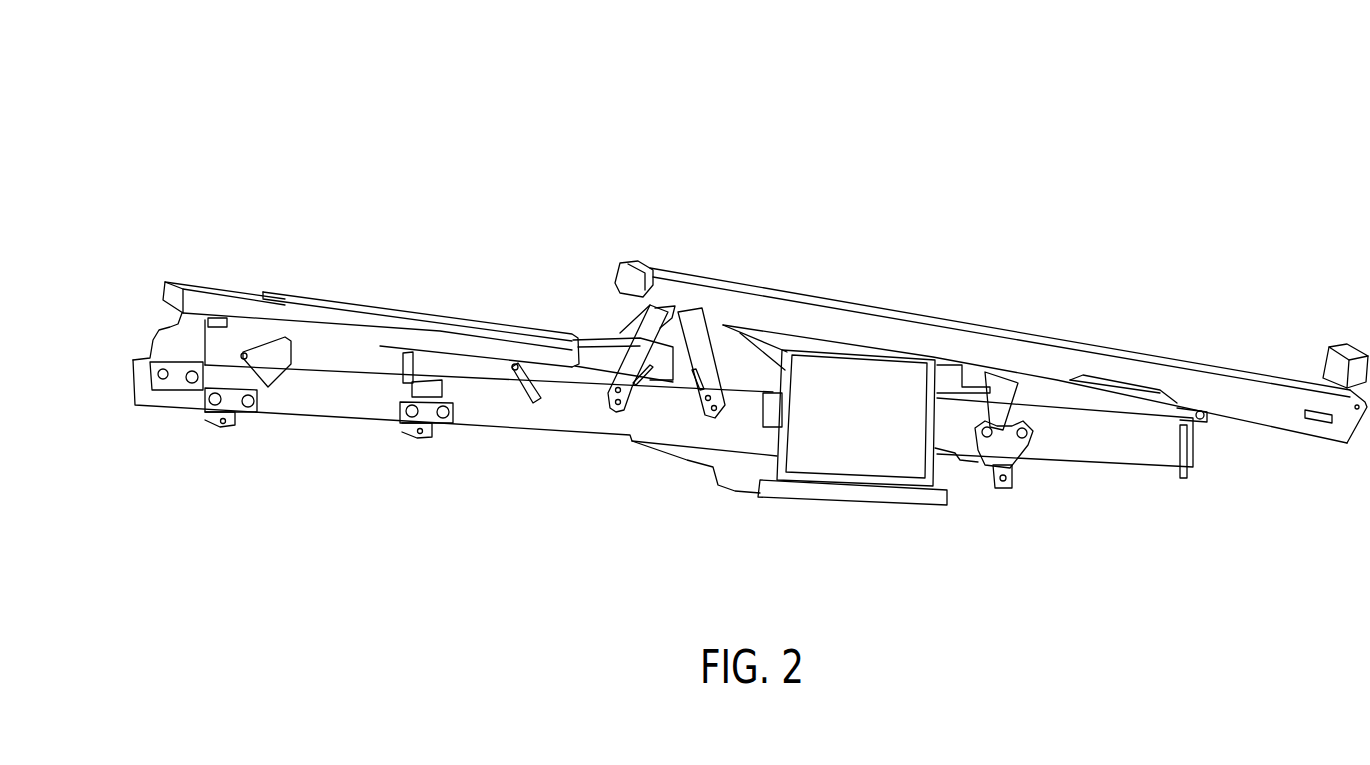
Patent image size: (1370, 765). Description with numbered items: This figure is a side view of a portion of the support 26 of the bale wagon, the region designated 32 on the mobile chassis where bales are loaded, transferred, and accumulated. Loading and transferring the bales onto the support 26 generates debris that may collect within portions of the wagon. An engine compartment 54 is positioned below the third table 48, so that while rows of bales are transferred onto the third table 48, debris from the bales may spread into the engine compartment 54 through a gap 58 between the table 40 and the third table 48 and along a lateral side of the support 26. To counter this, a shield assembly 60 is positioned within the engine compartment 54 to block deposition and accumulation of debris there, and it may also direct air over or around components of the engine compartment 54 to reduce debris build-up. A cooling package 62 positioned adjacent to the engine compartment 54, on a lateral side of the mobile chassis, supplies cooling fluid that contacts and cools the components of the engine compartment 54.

The lift assembly 32 is at (343, 107).
The table 40 is at (240, 290).
The gap 58 is at (577, 300).
The engine compartment 54 is at (732, 362).
The shield assembly 60 is at (778, 353).
The third table 48 is at (1125, 347).
The cooling package 62 is at (898, 468).
The support 26 is at (1113, 456).